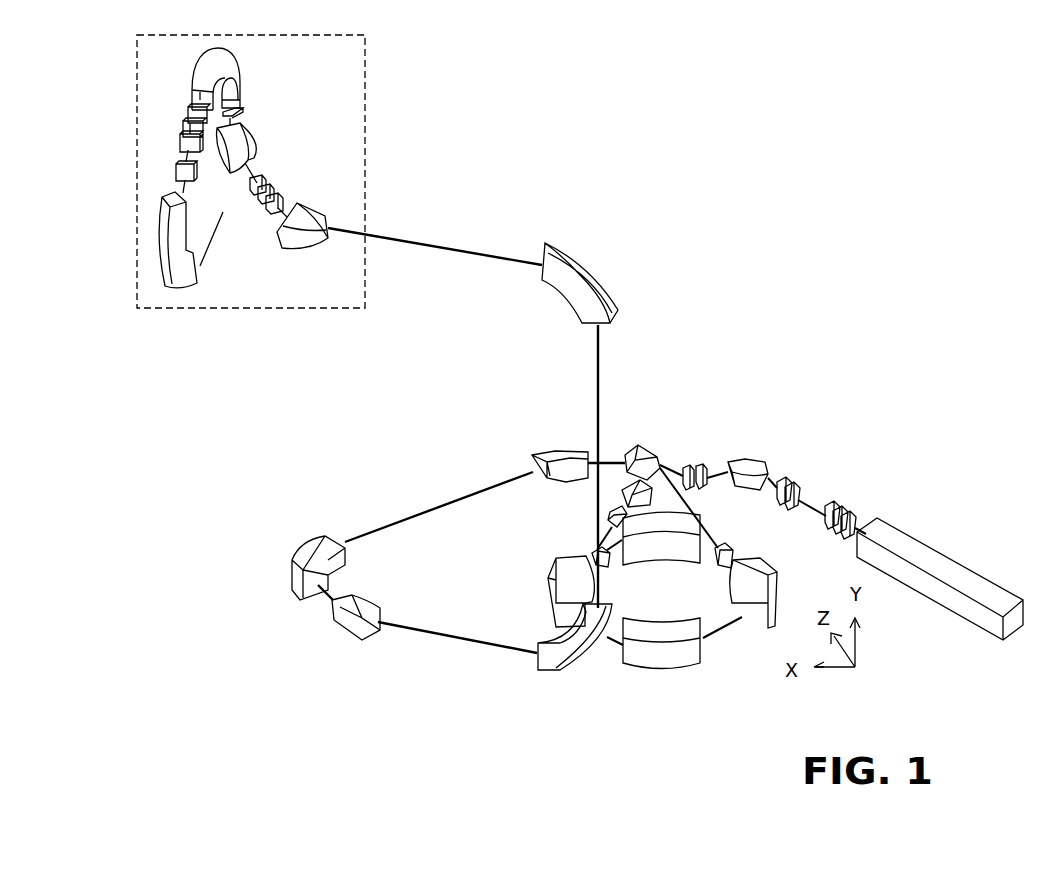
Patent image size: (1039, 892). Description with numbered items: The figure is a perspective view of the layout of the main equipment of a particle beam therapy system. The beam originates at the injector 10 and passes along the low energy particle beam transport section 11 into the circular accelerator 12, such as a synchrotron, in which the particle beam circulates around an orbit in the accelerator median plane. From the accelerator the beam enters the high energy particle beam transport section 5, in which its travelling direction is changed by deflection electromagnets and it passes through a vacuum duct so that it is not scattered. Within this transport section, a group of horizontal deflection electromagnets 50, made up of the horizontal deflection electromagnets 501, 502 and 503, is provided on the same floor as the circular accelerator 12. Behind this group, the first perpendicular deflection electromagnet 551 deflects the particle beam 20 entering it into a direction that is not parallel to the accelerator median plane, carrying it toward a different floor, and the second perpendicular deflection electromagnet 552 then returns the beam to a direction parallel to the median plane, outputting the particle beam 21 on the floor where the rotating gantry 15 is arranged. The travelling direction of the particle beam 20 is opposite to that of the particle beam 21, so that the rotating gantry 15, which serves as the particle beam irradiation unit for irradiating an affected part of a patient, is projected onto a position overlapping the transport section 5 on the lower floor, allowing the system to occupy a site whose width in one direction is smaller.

The high energy particle beam transport section 5 is at (429, 344).
The injector 10 is at (920, 540).
The low energy particle beam transport section 11 is at (787, 447).
The circular accelerator 12 is at (673, 604).
The rotating gantry 15 is at (365, 133).
The particle beam 20 is at (423, 637).
The particle beam 21 is at (380, 237).
The group of horizontal deflection electromagnets 50 is at (459, 560).
The horizontal deflection electromagnet 501 is at (552, 450).
The horizontal deflection electromagnet 502 is at (313, 540).
The horizontal deflection electromagnet 503 is at (347, 627).
The first perpendicular deflection electromagnet 551 is at (563, 655).
The second perpendicular deflection electromagnet 552 is at (585, 262).